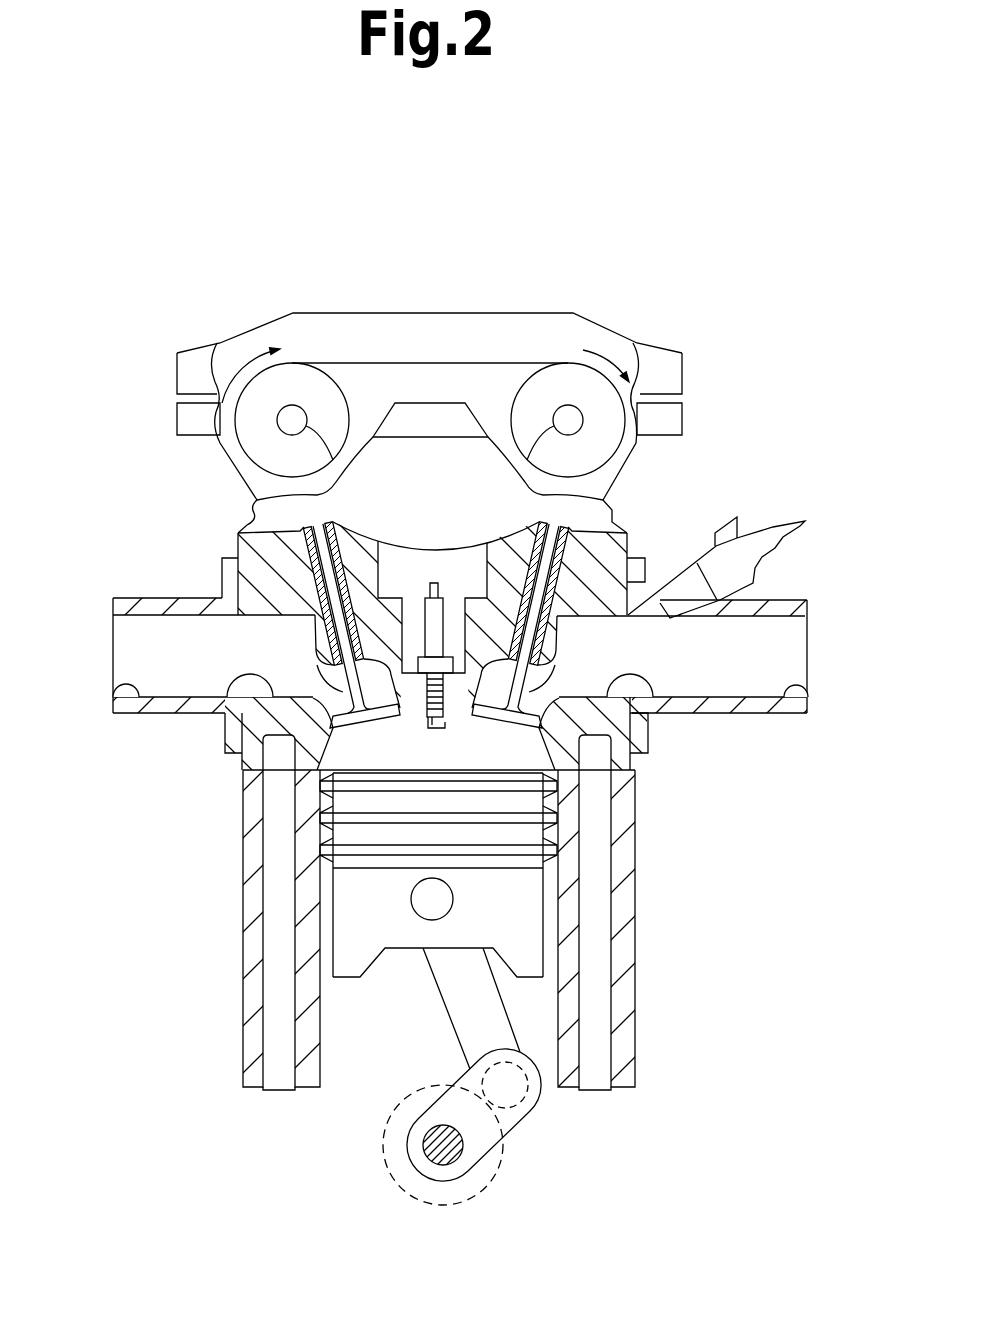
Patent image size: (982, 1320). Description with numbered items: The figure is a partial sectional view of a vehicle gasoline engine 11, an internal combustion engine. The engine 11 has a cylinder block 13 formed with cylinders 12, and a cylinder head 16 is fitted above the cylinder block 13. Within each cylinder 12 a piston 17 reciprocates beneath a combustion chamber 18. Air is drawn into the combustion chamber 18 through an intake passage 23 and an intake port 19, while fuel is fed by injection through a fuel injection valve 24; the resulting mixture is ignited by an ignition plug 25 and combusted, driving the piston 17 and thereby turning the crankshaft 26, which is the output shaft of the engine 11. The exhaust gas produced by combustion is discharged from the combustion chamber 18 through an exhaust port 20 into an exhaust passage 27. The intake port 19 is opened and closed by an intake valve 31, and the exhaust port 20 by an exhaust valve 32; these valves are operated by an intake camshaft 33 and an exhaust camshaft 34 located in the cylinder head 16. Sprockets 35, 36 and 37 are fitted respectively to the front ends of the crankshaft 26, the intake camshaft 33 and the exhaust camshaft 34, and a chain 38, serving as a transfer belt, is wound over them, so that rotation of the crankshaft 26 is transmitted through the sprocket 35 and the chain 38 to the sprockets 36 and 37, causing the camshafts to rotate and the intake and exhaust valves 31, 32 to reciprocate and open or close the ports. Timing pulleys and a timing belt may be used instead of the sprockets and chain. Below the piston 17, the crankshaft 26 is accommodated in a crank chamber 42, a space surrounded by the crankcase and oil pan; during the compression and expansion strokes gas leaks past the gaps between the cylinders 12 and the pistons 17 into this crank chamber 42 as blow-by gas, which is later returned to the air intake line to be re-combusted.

The gasoline engine 11 is at (708, 897).
The cylinders 12 is at (322, 1058).
The cylinder block 13 is at (627, 963).
The cylinder head 16 is at (633, 550).
The pistons 17 is at (397, 940).
The combustion chambers 18 is at (527, 755).
The intake ports 19 is at (648, 712).
The exhaust ports 20 is at (224, 713).
The intake passage 23 is at (806, 677).
The fuel injection valves 24 is at (748, 527).
The ignition plugs 25 is at (444, 610).
The crankshaft 26 is at (424, 1150).
The exhaust passage 27 is at (118, 683).
The intake valves 31 is at (533, 687).
The exhaust valves 32 is at (352, 690).
The intake camshaft 33 is at (554, 424).
The exhaust camshaft 34 is at (308, 424).
The sprocket 35 is at (500, 1163).
The sprocket 36 is at (610, 447).
The sprocket 37 is at (257, 448).
The chain 38 is at (460, 362).
The crank chamber 42 is at (477, 1249).